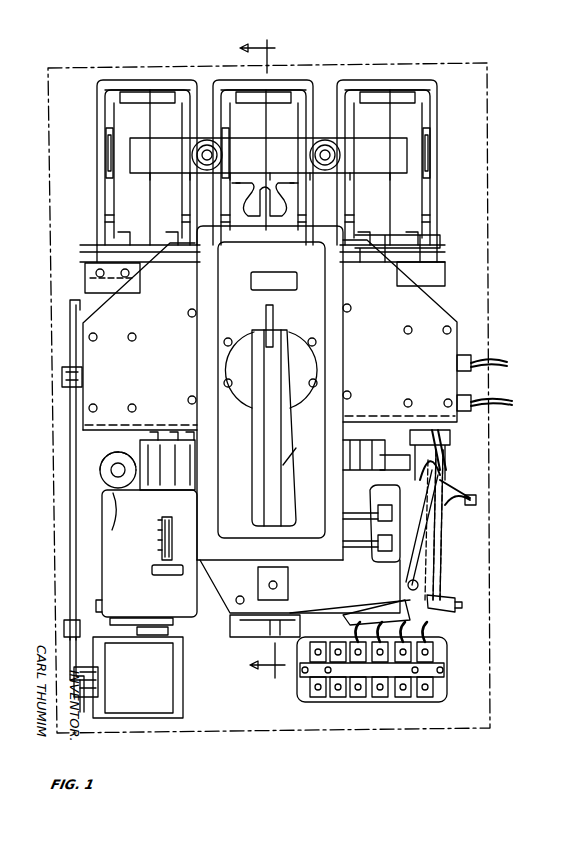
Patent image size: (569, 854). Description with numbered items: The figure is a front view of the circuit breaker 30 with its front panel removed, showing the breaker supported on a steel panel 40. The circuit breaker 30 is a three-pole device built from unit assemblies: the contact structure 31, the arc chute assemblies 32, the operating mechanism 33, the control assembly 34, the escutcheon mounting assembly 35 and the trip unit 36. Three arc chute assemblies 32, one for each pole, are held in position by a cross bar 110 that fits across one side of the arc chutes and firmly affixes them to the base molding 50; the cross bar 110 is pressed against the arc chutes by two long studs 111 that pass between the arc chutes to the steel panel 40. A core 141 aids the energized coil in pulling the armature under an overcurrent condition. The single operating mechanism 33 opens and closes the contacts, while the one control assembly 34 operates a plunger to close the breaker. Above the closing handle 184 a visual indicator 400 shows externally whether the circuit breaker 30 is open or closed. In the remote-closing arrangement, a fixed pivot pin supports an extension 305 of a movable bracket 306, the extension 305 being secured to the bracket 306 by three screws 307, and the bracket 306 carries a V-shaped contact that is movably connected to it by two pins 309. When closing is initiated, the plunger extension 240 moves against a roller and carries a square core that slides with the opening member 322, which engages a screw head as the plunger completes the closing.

The circuit breaker 30 is at (46, 64).
The steel panel 40 is at (486, 82).
The base molding 50 is at (100, 82).
The arc chute assembly 32 is at (105, 118).
The core 141 is at (436, 92).
The cross bar 110 is at (130, 148).
The long stud 111 is at (194, 154).
The contact structure 31 is at (428, 242).
The operating mechanism 33 is at (446, 274).
The escutcheon mounting assembly 35 is at (200, 281).
The visual indicator 400 is at (278, 276).
The trip unit 36 is at (254, 330).
The closing handle 184 is at (425, 421).
The control assembly 34 is at (462, 474).
The pin 309 is at (470, 513).
The screw 307 is at (448, 522).
The movable bracket 306 is at (440, 584).
The extension 305 is at (430, 608).
The opening member 322 is at (324, 612).
The plunger extension 240 is at (268, 632).